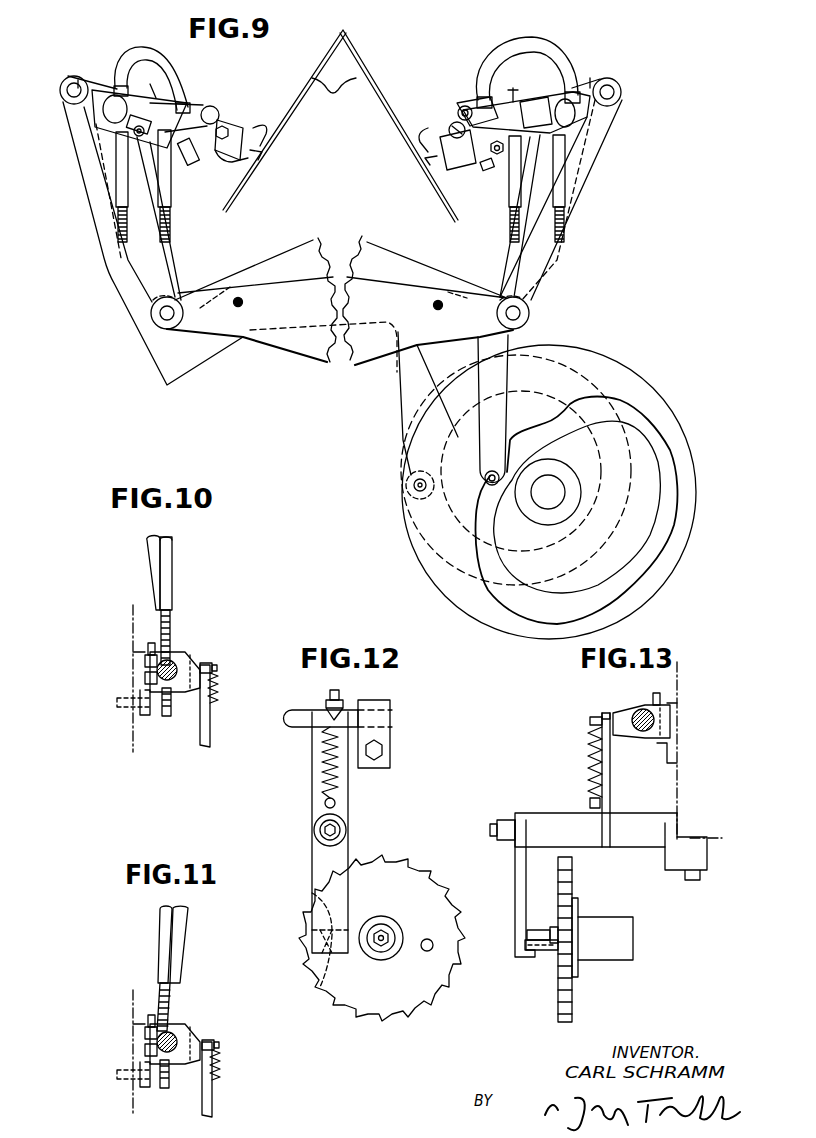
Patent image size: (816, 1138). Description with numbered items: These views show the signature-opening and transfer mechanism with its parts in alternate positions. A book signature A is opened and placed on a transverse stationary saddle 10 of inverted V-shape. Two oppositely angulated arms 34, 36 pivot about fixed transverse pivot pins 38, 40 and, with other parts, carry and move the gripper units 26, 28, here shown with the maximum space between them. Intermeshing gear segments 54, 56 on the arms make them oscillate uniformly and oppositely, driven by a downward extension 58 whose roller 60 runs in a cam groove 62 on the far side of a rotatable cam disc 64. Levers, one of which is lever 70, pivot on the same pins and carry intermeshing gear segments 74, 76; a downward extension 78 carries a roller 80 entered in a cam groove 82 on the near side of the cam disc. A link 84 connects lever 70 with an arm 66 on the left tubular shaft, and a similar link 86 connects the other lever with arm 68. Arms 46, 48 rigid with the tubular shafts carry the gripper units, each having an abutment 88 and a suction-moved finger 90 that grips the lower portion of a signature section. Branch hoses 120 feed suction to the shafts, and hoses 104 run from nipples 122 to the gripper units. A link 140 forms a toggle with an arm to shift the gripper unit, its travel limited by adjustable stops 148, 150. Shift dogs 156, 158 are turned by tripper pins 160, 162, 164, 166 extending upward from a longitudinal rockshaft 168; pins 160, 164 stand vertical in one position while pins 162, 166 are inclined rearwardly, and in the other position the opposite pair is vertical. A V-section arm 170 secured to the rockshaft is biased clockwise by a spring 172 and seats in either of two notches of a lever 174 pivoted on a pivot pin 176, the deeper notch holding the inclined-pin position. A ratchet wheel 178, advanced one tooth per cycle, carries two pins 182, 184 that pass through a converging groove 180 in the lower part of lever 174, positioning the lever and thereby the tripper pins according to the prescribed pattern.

In FIG. 9, the saddle 10 is at (340, 126).
In FIG. 9, the book signature A is at (383, 93).
In FIG. 9, the hose 104 is at (133, 60).
In FIG. 9, the nipple 122 is at (118, 85).
In FIG. 9, the arm 66 is at (68, 102).
In FIG. 9, the arm 68 is at (590, 83).
In FIG. 9, the arm 34 is at (100, 272).
In FIG. 9, the arm 36 is at (500, 272).
In FIG. 9, the link 84 is at (90, 124).
In FIG. 9, the link 86 is at (588, 160).
In FIG. 9, the lever 70 is at (194, 324).
In FIG. 9, the downward extension 78 is at (495, 432).
In FIG. 9, the shift dog 156 is at (138, 152).
In FIG. 9, the tripper pin 160 is at (118, 180).
In FIG. 10, the tripper pin 160 is at (174, 552).
In FIG. 11, the tripper pin 160 is at (186, 933).
In FIG. 9, the tripper pin 162 is at (172, 200).
In FIG. 10, the tripper pin 162 is at (148, 555).
In FIG. 11, the tripper pin 162 is at (162, 931).
In FIG. 9, the tripper pin 164 is at (510, 204).
In FIG. 9, the tripper pin 166 is at (566, 200).
In FIG. 9, the branch hose 120 is at (122, 104).
In FIG. 9, the link 140 is at (198, 104).
In FIG. 9, the gripper unit 26 is at (236, 126).
In FIG. 9, the adjustable stop 148 is at (192, 166).
In FIG. 9, the arm 46 is at (228, 162).
In FIG. 9, the abutment 88 is at (264, 126).
In FIG. 9, the finger 90 is at (258, 160).
In FIG. 9, the gripper unit 28 is at (458, 108).
In FIG. 9, the arm 48 is at (466, 163).
In FIG. 9, the adjustable stop 150 is at (492, 172).
In FIG. 9, the shift dog 158 is at (541, 140).
In FIG. 9, the gear segment 54 is at (280, 260).
In FIG. 9, the gear segment 56 is at (402, 268).
In FIG. 9, the pivot pin 38 is at (244, 304).
In FIG. 9, the pivot pin 40 is at (434, 308).
In FIG. 9, the gear segment 74 is at (305, 352).
In FIG. 9, the gear segment 76 is at (381, 360).
In FIG. 9, the downward extension 58 is at (403, 412).
In FIG. 9, the roller 60 is at (404, 474).
In FIG. 9, the roller 80 is at (480, 474).
In FIG. 9, the cam disc 64 is at (645, 394).
In FIG. 9, the cam groove 62 is at (570, 354).
In FIG. 9, the cam groove 82 is at (670, 442).
In FIG. 10, the rockshaft 168 is at (170, 666).
In FIG. 11, the rockshaft 168 is at (172, 1041).
In FIG. 12, the rockshaft 168 is at (302, 710).
In FIG. 13, the rockshaft 168 is at (640, 706).
In FIG. 10, the arm 170 is at (208, 664).
In FIG. 11, the arm 170 is at (212, 1041).
In FIG. 12, the arm 170 is at (344, 705).
In FIG. 13, the arm 170 is at (600, 715).
In FIG. 10, the spring 172 is at (222, 700).
In FIG. 11, the spring 172 is at (224, 1078).
In FIG. 12, the spring 172 is at (322, 772).
In FIG. 13, the spring 172 is at (588, 758).
In FIG. 10, the lever 174 is at (200, 730).
In FIG. 11, the lever 174 is at (202, 1100).
In FIG. 12, the lever 174 is at (345, 855).
In FIG. 13, the lever 174 is at (518, 878).
In FIG. 12, the pivot pin 176 is at (348, 836).
In FIG. 13, the pivot pin 176 is at (494, 830).
In FIG. 12, the ratchet wheel 178 is at (422, 876).
In FIG. 13, the ratchet wheel 178 is at (574, 880).
In FIG. 12, the groove 180 is at (327, 992).
In FIG. 12, the pin 182 is at (430, 950).
In FIG. 13, the pin 182 is at (544, 952).
In FIG. 12, the pin 184 is at (312, 896).
In FIG. 13, the pin 184 is at (542, 930).